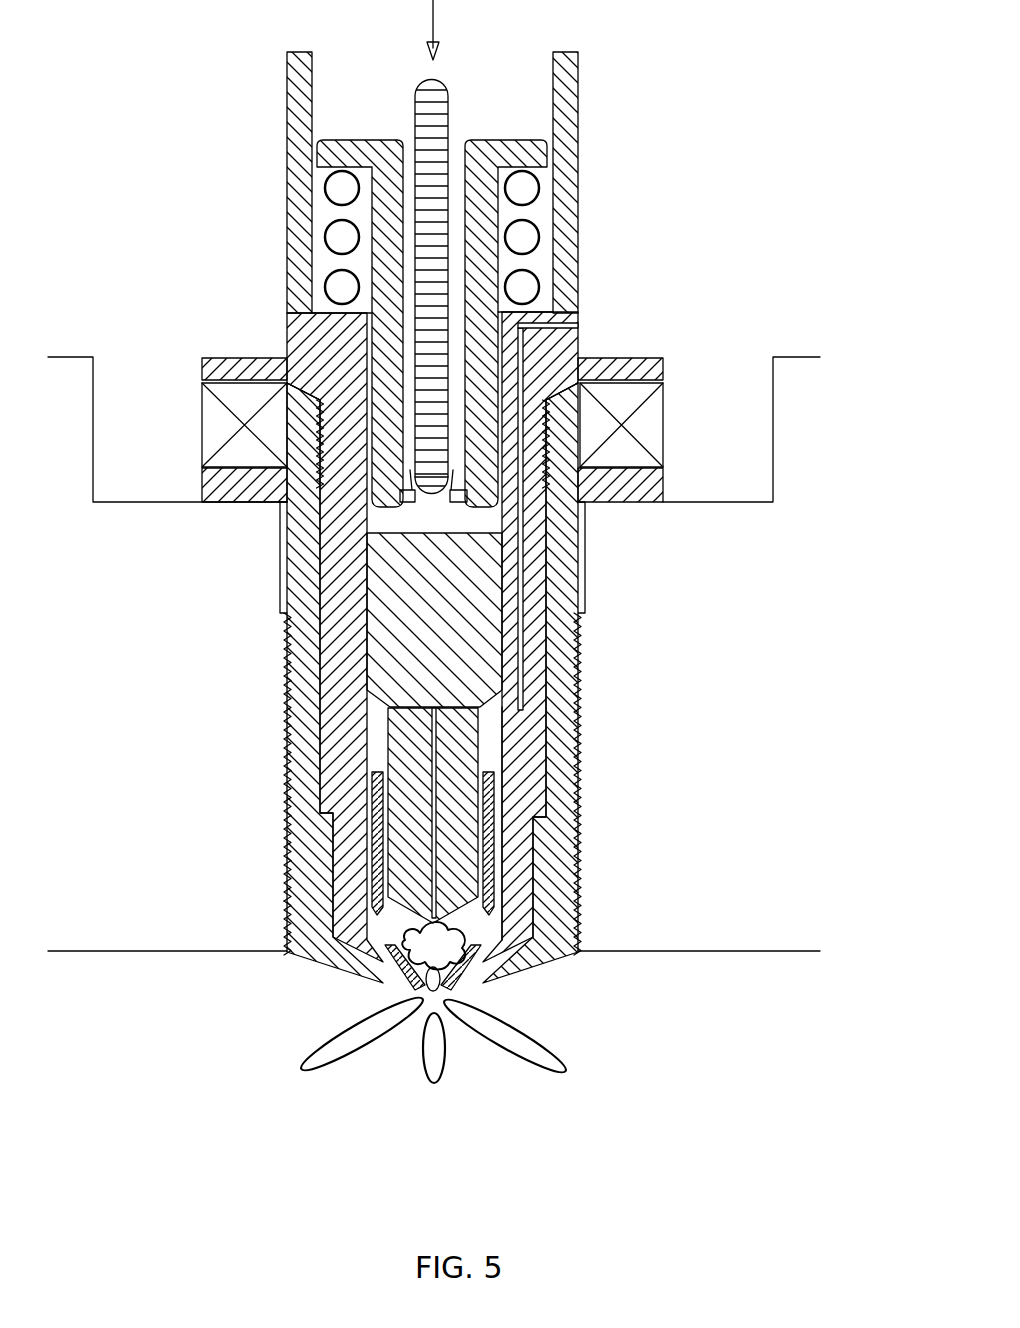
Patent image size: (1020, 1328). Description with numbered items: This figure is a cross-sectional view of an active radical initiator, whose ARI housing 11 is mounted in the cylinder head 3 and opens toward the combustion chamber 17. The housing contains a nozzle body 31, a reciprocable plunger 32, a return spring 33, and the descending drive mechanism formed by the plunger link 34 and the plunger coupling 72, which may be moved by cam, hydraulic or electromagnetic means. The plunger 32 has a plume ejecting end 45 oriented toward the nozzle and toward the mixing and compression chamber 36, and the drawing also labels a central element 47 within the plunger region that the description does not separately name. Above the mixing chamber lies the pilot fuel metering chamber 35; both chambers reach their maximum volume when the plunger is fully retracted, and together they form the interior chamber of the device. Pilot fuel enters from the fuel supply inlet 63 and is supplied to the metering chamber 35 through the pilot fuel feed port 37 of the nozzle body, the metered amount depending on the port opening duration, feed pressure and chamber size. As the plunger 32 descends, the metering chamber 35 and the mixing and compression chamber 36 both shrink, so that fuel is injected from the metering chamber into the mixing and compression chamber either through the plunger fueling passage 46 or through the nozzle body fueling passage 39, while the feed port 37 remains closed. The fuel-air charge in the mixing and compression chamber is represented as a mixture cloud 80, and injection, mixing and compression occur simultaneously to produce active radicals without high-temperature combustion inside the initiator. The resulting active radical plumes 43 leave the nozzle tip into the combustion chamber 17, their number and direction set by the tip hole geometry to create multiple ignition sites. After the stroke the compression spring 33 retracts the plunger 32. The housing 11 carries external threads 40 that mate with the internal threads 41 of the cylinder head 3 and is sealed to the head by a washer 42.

The cylinder head 3 is at (178, 633).
The ARI housing 11 is at (202, 477).
The combustion chamber 17 is at (657, 1163).
The nozzle body 31 is at (550, 808).
The plunger 32 is at (520, 560).
The return spring 33 is at (523, 245).
The plunger link 34 is at (440, 78).
The pilot fuel metering chamber 35 is at (488, 757).
The mixing and compression chamber 36 is at (473, 932).
The pilot fuel feed port of nozzle body 37 is at (535, 680).
The nozzle body fueling passage 39 is at (503, 860).
The external threads 40 is at (287, 918).
The internal threads 41 is at (287, 805).
The washer 42 is at (633, 498).
The active radical plumes 43 is at (434, 1083).
The plume ejecting end 45 is at (410, 968).
The plunger fueling passage 46 is at (390, 800).
The valve needle 47 is at (437, 813).
The fuel supply inlet 63 is at (582, 327).
The plunger coupling 72 is at (503, 138).
The mixture cloud 80 is at (460, 985).